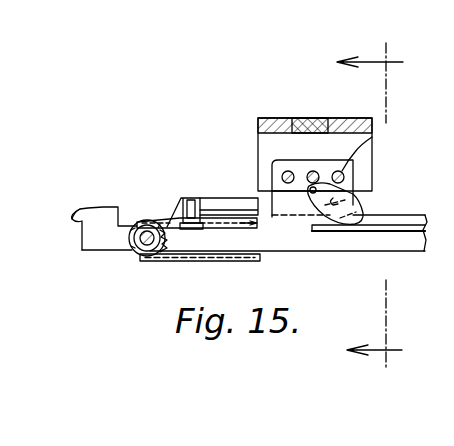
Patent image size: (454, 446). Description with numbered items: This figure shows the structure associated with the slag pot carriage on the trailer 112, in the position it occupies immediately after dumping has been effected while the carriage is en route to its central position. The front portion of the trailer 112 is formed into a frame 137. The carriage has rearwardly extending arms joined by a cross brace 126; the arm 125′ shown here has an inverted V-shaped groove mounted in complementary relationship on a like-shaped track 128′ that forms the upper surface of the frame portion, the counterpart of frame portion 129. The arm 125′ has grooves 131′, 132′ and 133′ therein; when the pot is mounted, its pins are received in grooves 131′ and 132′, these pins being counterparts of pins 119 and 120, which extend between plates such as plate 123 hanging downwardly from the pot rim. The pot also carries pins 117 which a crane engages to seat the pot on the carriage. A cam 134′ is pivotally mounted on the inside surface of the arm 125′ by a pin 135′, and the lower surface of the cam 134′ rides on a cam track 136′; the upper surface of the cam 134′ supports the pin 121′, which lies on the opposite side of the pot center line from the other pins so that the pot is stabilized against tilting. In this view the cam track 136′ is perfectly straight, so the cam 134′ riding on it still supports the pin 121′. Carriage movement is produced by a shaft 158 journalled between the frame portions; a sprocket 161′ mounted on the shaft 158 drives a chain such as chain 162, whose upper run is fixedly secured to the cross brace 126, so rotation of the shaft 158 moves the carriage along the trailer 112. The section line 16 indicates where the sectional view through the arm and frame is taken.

The section line 16- 16 is at (378, 206).
The trailer 112 is at (85, 253).
The frame 137 is at (80, 209).
The shaft 158 is at (140, 262).
The sprocket 161′ is at (160, 254).
The chain 162 is at (213, 262).
The frame portion 129 is at (297, 252).
The track 128′ is at (392, 214).
The cam 134′ is at (317, 211).
The cam track 136′ is at (347, 234).
The groove 132′ is at (300, 184).
The arm 125′ is at (199, 197).
The cross brace 126 is at (183, 197).
The plate 123 is at (267, 140).
The pins 117 is at (331, 118).
The groove 131′ is at (280, 179).
The pin 119 is at (288, 170).
The pin 120 is at (313, 170).
The pin 135′ is at (342, 134).
The pin 121′ is at (372, 137).
The groove 133′ is at (330, 200).